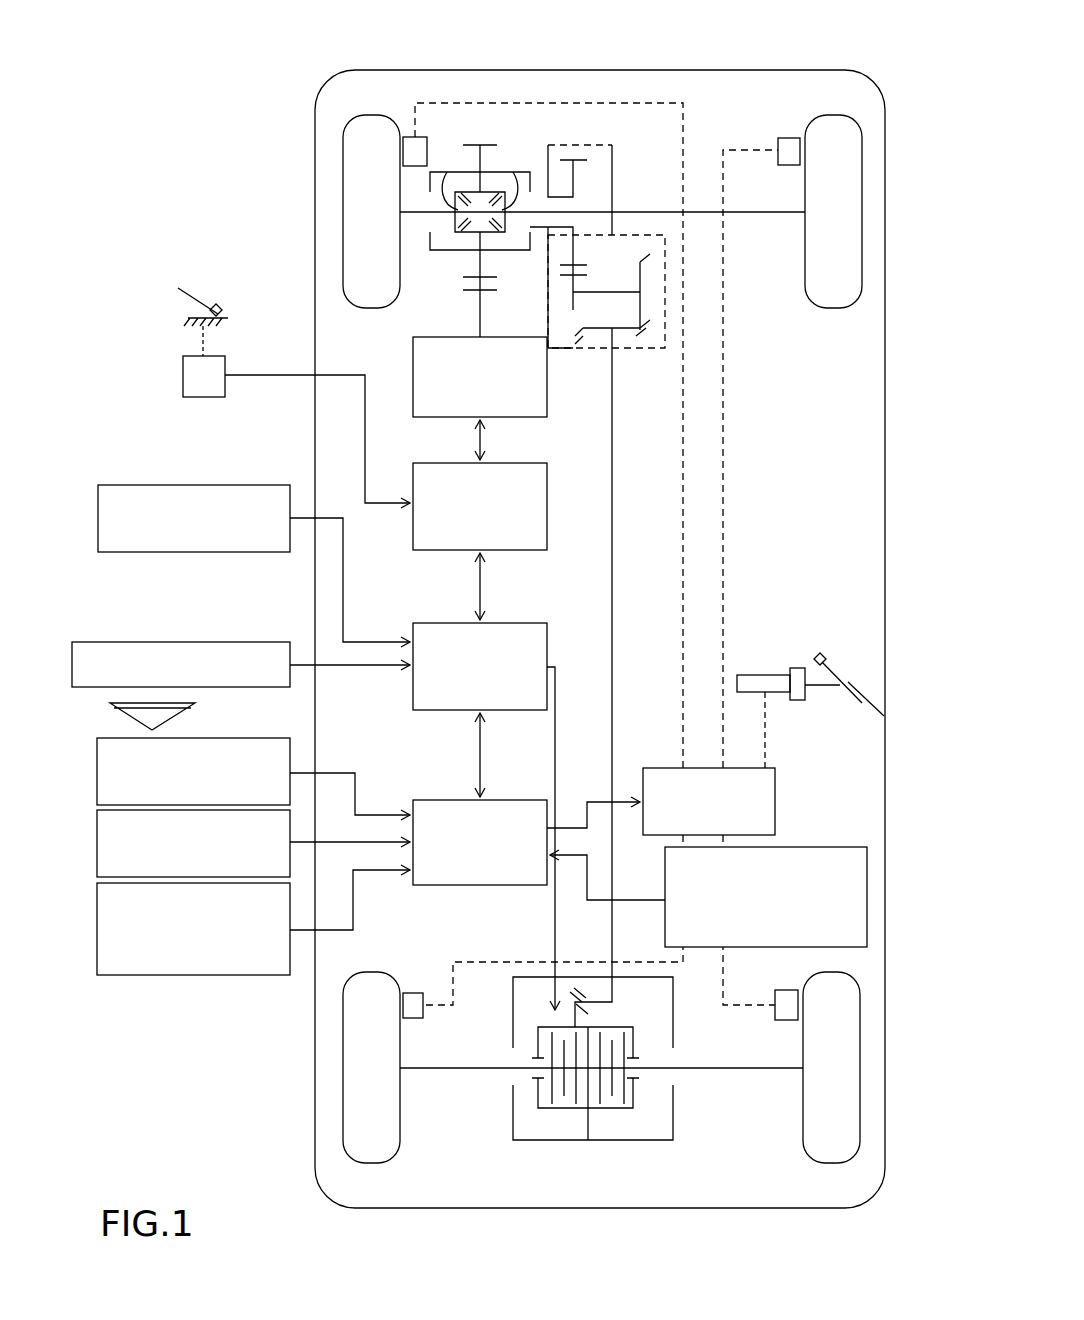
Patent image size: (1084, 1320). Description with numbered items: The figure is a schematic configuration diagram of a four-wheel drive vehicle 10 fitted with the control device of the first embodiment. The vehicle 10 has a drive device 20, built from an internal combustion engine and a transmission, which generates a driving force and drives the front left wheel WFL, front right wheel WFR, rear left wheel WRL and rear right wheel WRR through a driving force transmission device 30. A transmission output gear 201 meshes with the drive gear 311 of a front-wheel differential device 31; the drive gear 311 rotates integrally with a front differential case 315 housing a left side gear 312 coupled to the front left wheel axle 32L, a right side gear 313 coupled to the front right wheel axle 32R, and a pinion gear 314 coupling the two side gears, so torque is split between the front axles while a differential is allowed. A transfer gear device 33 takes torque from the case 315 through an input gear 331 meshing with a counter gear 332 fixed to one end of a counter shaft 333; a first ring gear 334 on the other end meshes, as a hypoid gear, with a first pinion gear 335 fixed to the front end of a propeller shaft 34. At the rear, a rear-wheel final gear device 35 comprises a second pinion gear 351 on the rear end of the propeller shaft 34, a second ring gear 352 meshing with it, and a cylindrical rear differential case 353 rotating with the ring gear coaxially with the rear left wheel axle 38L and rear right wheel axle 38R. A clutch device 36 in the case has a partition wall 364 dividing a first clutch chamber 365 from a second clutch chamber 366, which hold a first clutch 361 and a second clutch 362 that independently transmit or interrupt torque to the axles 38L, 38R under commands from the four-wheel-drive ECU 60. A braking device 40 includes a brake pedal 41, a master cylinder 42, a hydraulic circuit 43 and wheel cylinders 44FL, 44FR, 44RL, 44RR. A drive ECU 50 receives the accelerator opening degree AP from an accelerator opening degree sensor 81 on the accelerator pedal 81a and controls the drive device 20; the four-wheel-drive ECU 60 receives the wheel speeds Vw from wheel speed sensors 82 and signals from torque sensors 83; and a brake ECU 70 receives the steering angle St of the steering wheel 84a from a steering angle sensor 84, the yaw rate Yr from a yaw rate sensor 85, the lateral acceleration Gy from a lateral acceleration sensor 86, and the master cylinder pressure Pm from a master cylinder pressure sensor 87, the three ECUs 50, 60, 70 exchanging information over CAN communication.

The four-wheel drive vehicle 10 is at (661, 54).
The drive device 20 is at (410, 355).
The transmission output gear 201 is at (467, 290).
The driving force transmission device 30 is at (740, 362).
The front-wheel differential device 31 is at (441, 88).
The drive gear 311 is at (480, 143).
The left side gear 312 is at (438, 172).
The right side gear 313 is at (505, 186).
The pinion gear 314 is at (490, 172).
The front differential case 315 is at (500, 260).
The front left wheel axle 32L is at (417, 216).
The front right wheel axle 32R is at (775, 216).
The transfer gear device 33 is at (615, 186).
The input gear 331 is at (575, 160).
The counter gear 332 is at (567, 350).
The counter shaft 333 is at (600, 287).
The first ring gear 334 is at (650, 298).
The first pinion gear 335 is at (623, 348).
The propeller shaft 34 is at (613, 549).
The rear-wheel final gear device 35 is at (627, 976).
The second pinion gear 351 is at (576, 988).
The second ring gear 352 is at (548, 1000).
The rear differential case 353 is at (540, 1016).
The clutch device 36 is at (547, 1138).
The first clutch 361 is at (535, 1100).
The second clutch 362 is at (640, 1100).
The partition wall 364 is at (592, 1125).
The first clutch chamber 365 is at (534, 1045).
The second clutch chamber 366 is at (648, 1046).
The rear left wheel axle 38L is at (425, 1072).
The rear right wheel axle 38R is at (752, 1072).
The braking device 40 is at (838, 638).
The brake pedal 41 is at (878, 695).
The master cylinder 42 is at (762, 674).
The hydraulic circuit 43 is at (778, 781).
The wheel cylinder 44FL is at (410, 136).
The wheel cylinder 44FR is at (786, 137).
The wheel cylinder 44RL is at (412, 992).
The wheel cylinder 44RR is at (782, 1022).
The drive ECU 50 is at (430, 462).
The 4WD ECU 60 is at (430, 622).
The brake ECU 70 is at (430, 799).
The accelerator opening degree sensor 81 is at (182, 376).
The accelerator pedal 81a is at (208, 300).
The wheel speed sensors 82 is at (188, 484).
The torque sensors 83 is at (190, 641).
The steering angle sensor 84 is at (96, 771).
The steering wheel 84a is at (110, 710).
The yaw rate sensor 85 is at (96, 836).
The lateral acceleration sensor 86 is at (96, 931).
The master cylinder pressure sensor 87 is at (805, 846).
The front left wheel WFL is at (343, 212).
The front right wheel WFR is at (862, 212).
The rear left wheel WRL is at (343, 1052).
The rear right wheel WRR is at (860, 1052).
The accelerator opening degree AP is at (317, 424).
The wheel speed Vw is at (350, 580).
The steering angle St is at (350, 781).
The yaw rate Yr is at (350, 830).
The lateral acceleration Gy is at (350, 900).
The master cylinder pressure Pm is at (607, 877).